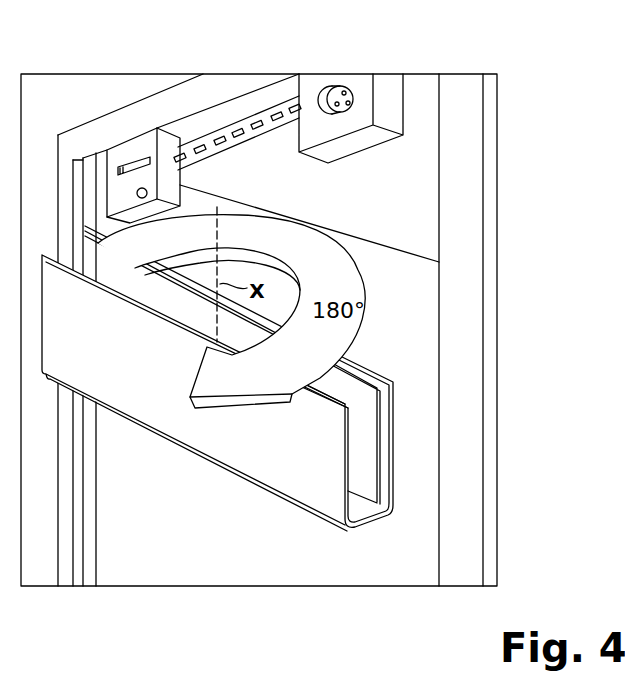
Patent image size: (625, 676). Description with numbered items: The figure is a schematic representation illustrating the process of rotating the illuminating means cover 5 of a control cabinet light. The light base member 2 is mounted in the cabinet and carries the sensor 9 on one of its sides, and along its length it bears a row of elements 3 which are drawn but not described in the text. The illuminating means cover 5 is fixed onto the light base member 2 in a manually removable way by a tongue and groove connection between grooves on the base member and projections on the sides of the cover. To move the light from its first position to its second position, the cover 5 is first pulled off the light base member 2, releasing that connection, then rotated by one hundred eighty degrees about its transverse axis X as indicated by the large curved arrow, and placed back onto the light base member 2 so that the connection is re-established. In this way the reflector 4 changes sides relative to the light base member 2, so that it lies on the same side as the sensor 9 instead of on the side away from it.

The light base member 2 is at (205, 123).
The slots 3 is at (177, 150).
The sensor 9 is at (137, 188).
The illuminating means cover 5 is at (198, 393).
The reflector 4 is at (372, 448).